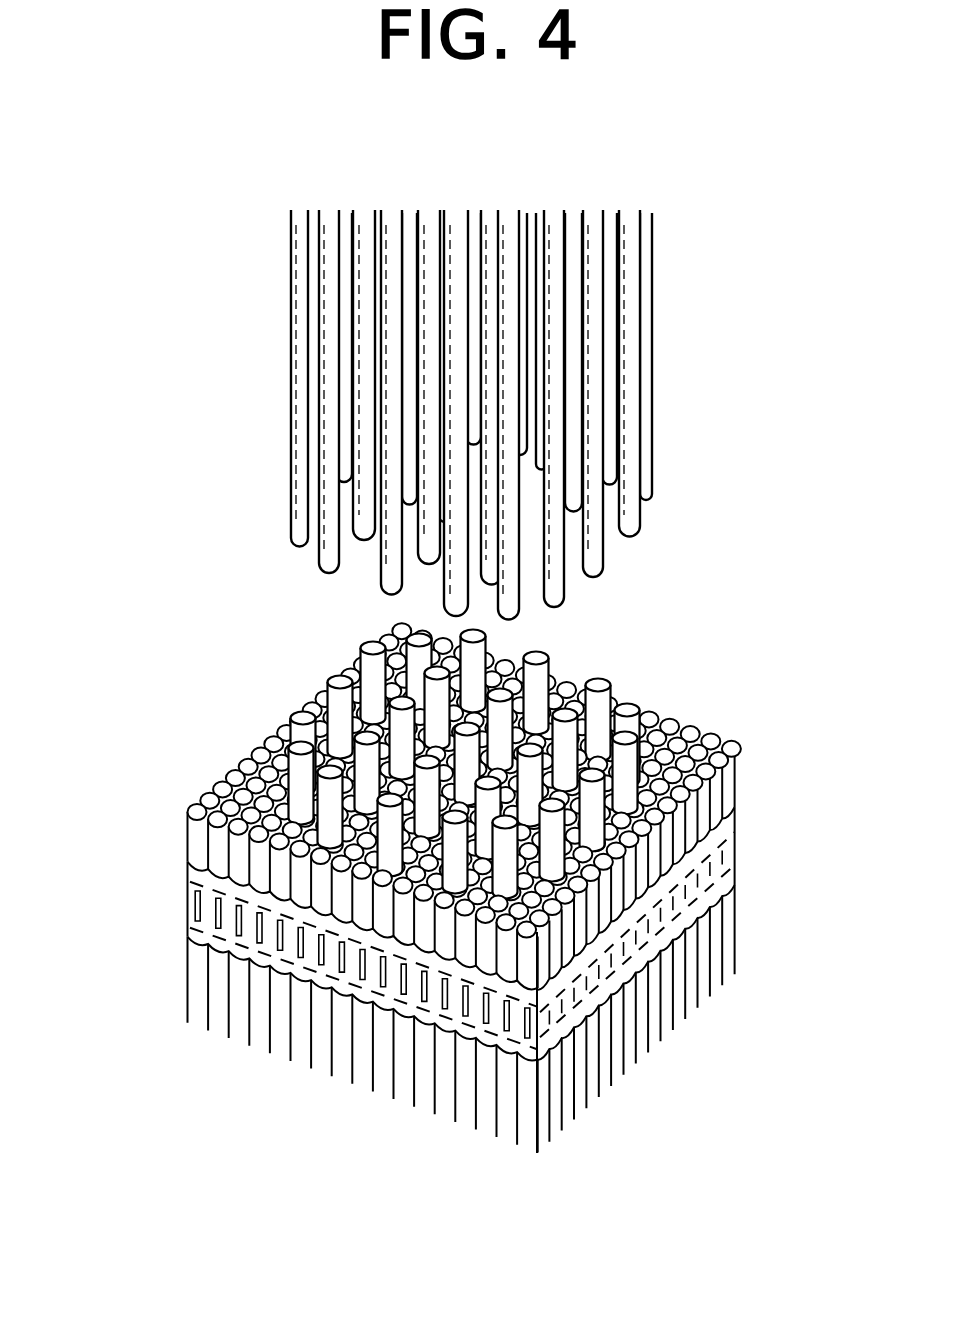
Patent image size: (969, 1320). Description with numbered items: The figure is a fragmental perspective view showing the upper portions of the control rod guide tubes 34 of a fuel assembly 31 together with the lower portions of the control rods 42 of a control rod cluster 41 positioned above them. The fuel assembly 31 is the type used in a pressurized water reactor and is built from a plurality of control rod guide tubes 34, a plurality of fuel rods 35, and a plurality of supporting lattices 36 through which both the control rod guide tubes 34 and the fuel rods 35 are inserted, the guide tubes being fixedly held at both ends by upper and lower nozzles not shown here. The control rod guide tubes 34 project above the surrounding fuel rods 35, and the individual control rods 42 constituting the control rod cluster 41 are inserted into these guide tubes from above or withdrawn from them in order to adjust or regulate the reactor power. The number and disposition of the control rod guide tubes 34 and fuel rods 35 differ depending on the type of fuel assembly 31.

The fuel assembly 31 is at (449, 879).
The control rod guide tube 34 is at (598, 680).
The fuel rod 35 is at (497, 772).
The supporting lattice 36 is at (720, 850).
The control rod cluster 41 is at (459, 415).
The control rod 42 is at (632, 362).